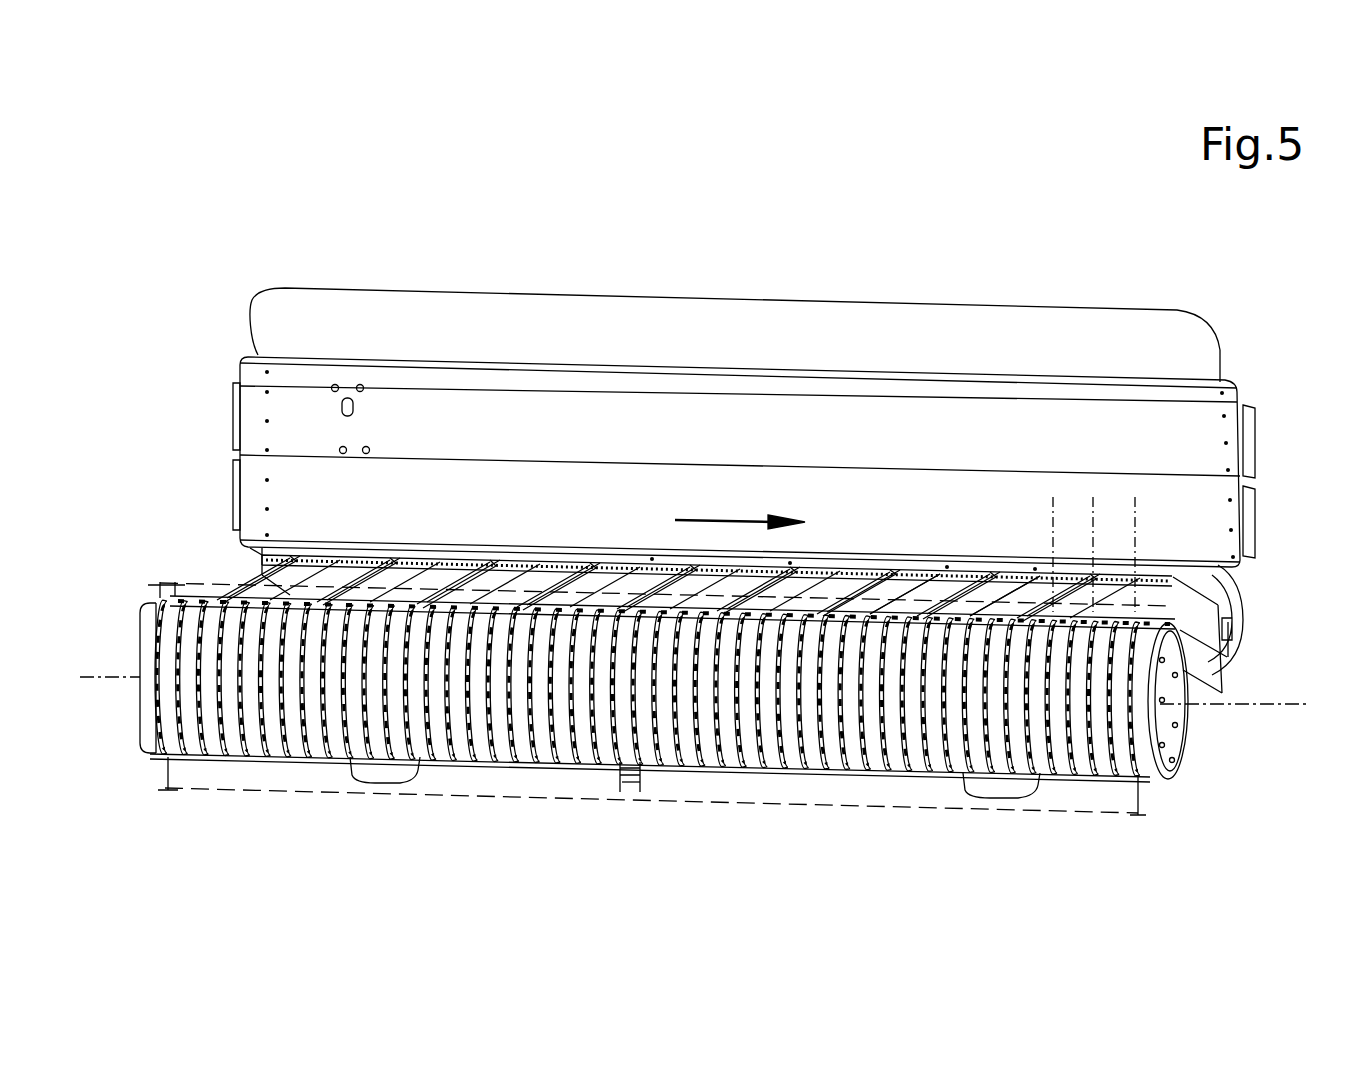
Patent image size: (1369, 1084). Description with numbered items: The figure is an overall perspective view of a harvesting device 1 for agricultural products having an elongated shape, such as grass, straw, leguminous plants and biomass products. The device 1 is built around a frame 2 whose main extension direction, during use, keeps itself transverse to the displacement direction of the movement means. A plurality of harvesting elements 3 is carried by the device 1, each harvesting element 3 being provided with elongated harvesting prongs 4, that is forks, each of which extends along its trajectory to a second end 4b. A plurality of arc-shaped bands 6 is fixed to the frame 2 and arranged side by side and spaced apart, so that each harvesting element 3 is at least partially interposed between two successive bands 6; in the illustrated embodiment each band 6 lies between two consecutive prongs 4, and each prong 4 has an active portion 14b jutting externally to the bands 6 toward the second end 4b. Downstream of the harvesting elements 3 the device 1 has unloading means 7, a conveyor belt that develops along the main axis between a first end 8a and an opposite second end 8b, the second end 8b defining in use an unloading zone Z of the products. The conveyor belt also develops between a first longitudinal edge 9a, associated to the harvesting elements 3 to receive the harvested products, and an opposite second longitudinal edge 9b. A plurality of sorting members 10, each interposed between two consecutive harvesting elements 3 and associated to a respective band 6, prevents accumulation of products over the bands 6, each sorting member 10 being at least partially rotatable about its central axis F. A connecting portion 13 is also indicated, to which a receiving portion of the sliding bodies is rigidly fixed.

The harvesting device 1 is at (200, 271).
The frame 2 is at (1188, 726).
The harvesting element 3 is at (155, 773).
The elongated harvesting prong 4 is at (630, 600).
The second end 4b is at (610, 700).
The band 6 is at (873, 758).
The unloading means 7 is at (601, 592).
The first end 8a is at (233, 595).
The second end 8b is at (1212, 638).
The first longitudinal edge 9a is at (973, 600).
The second longitudinal edge 9b is at (935, 585).
The sorting member 10 is at (430, 610).
The connecting portion 13 is at (293, 592).
The active portion 14b is at (642, 792).
The central axis F is at (1135, 540).
The unloading zone Z is at (1210, 687).